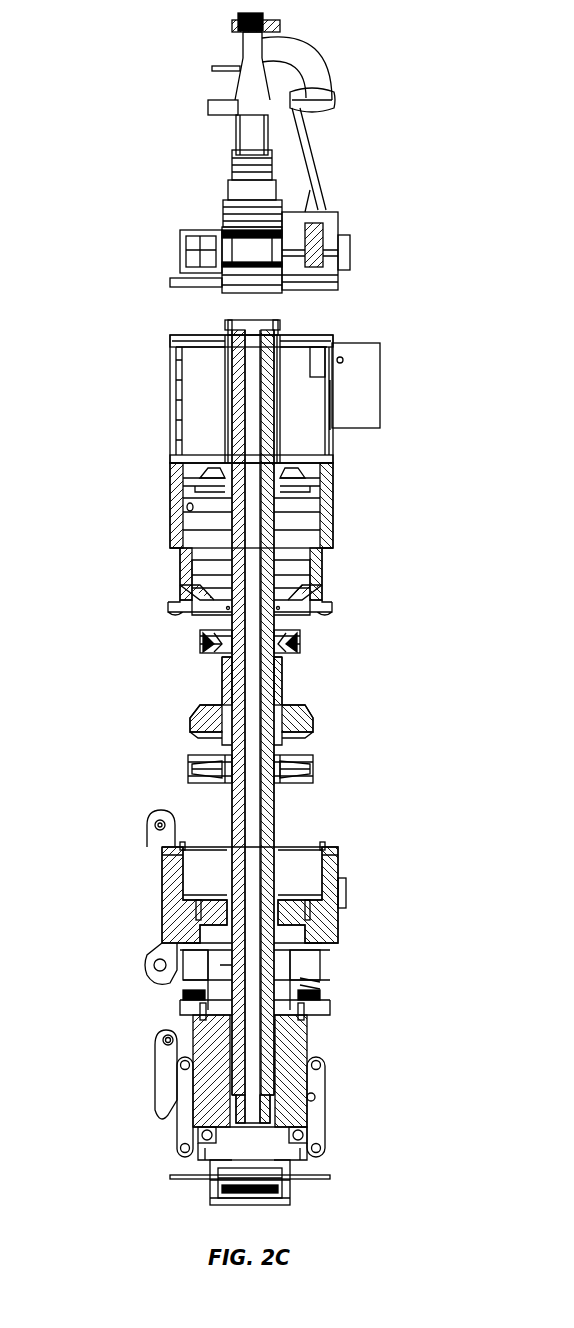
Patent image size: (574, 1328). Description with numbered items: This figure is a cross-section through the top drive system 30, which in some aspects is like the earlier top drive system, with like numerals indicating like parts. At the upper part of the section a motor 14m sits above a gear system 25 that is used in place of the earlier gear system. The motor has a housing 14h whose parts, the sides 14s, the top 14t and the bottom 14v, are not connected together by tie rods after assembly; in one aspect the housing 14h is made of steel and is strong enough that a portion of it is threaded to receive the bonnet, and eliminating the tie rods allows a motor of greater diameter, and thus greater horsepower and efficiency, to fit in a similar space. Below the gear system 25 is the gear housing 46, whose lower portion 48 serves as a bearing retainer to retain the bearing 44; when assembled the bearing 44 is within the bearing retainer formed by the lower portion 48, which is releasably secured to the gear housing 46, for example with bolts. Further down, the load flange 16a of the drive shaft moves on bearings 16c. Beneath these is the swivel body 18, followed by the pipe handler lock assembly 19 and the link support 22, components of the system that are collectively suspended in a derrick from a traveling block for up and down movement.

The top drive system 30 is at (93, 142).
The top 14t is at (312, 335).
The sides 14s is at (173, 382).
The housing 14h is at (172, 428).
The motor 14m is at (308, 408).
The bottom 14v is at (305, 488).
The gear system 25 is at (171, 536).
The gear housing 46 is at (319, 596).
The lower portion of gear housing 48 is at (322, 612).
The bearing 44 is at (300, 645).
The load flange 16a is at (312, 726).
The bearings 16c is at (312, 776).
The swivel body 18 is at (168, 882).
The pipe handler lock assembly 19 is at (322, 984).
The link support 22 is at (163, 1088).